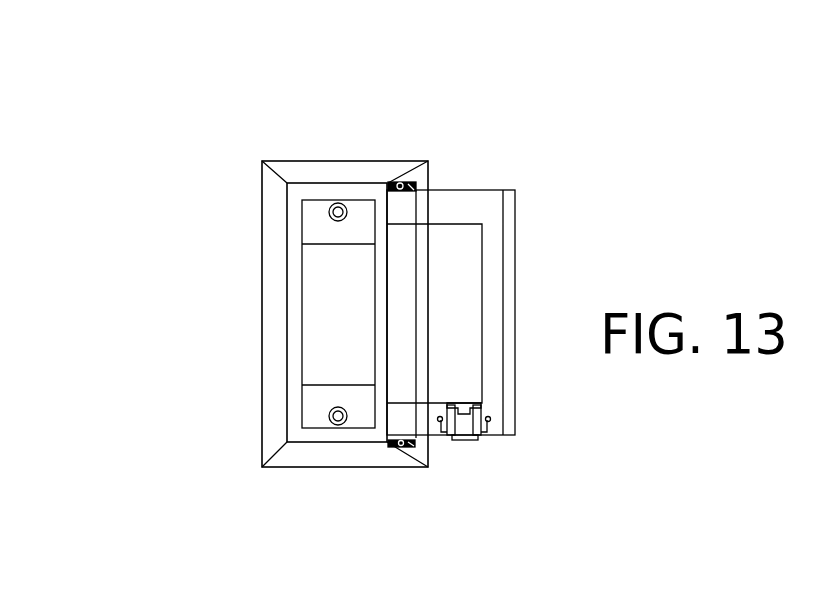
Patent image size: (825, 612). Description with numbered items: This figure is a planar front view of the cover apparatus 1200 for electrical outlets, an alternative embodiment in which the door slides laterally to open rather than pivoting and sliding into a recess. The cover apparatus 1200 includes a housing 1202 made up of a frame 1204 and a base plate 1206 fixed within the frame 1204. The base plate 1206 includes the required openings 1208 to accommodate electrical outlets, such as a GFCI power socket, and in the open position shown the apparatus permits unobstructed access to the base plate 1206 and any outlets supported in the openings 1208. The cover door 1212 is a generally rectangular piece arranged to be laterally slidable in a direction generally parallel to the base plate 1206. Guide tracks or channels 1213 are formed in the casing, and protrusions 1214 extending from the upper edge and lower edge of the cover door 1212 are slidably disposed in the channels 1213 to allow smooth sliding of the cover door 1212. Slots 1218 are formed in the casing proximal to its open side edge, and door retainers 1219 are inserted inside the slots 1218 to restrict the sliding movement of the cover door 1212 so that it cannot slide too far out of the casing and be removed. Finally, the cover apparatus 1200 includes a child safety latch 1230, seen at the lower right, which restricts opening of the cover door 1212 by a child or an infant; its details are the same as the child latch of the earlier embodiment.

The cover apparatus 1200 is at (363, 308).
The housing 1202 is at (255, 140).
The frame 1204 is at (273, 298).
The base plate 1206 is at (313, 400).
The openings 1208 is at (323, 288).
The cover door 1212 is at (487, 212).
The guide tracks or channels 1213 is at (313, 188).
The protrusions 1214 is at (398, 183).
The slots 1218 is at (398, 181).
The door retainers 1219 is at (410, 185).
The child safety latch 1230 is at (472, 440).